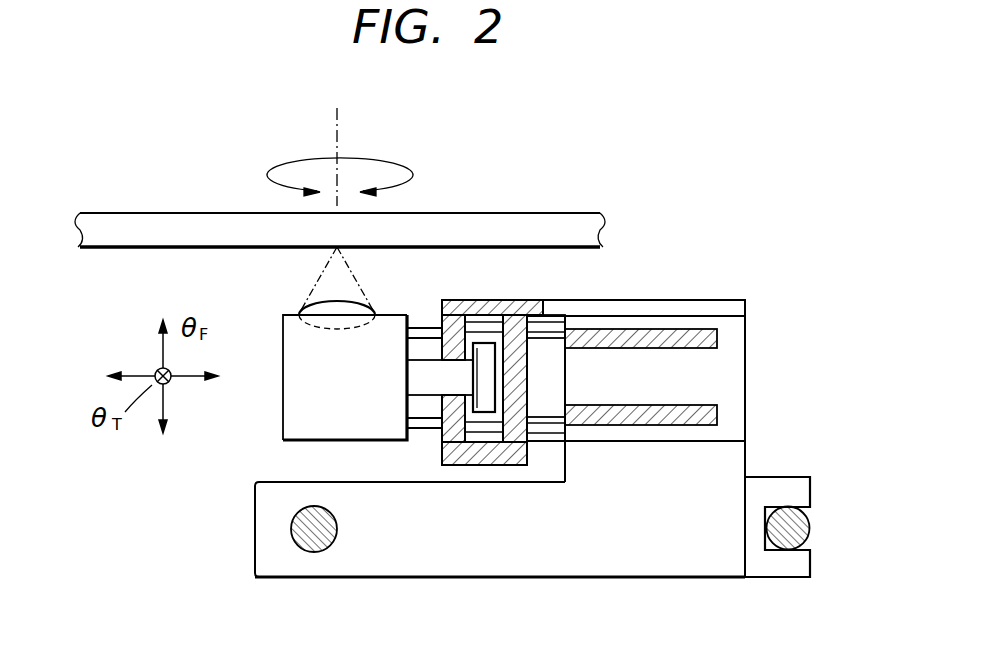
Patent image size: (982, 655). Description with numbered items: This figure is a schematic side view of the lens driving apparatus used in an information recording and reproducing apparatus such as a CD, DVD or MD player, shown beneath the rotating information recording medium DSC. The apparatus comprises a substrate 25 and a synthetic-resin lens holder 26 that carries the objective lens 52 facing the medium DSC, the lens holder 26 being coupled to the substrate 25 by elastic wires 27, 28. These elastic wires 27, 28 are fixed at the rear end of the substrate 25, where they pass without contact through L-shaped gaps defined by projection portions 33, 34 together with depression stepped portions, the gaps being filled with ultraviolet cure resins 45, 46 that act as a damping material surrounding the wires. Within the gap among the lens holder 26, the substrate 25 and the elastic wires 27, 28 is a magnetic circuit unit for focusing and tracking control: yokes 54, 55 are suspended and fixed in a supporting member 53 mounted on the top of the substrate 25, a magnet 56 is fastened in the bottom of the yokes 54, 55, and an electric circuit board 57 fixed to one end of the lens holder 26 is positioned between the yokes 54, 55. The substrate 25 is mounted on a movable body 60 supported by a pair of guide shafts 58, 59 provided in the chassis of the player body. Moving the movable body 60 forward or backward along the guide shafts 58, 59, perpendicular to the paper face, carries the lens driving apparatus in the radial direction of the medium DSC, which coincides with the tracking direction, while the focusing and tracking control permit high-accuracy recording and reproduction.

The information recording medium DSC is at (575, 212).
The substrate 25 is at (740, 380).
The lens holder 26 is at (292, 425).
The elastic wire 27 is at (552, 328).
The elastic wire 28 is at (543, 423).
The projection portion 33 is at (697, 318).
The projection portion 34 is at (690, 433).
The ultraviolet cure resin 45 is at (717, 338).
The ultraviolet cure resin 46 is at (717, 413).
The objective lens 52 is at (300, 308).
The supporting member 53 is at (645, 300).
The yoke 54 is at (450, 316).
The yoke 55 is at (508, 316).
The magnet 56 is at (485, 455).
The electric circuit board 57 is at (483, 393).
The guide shaft 58 is at (313, 540).
The guide shaft 59 is at (812, 522).
The movable body 60 is at (648, 567).